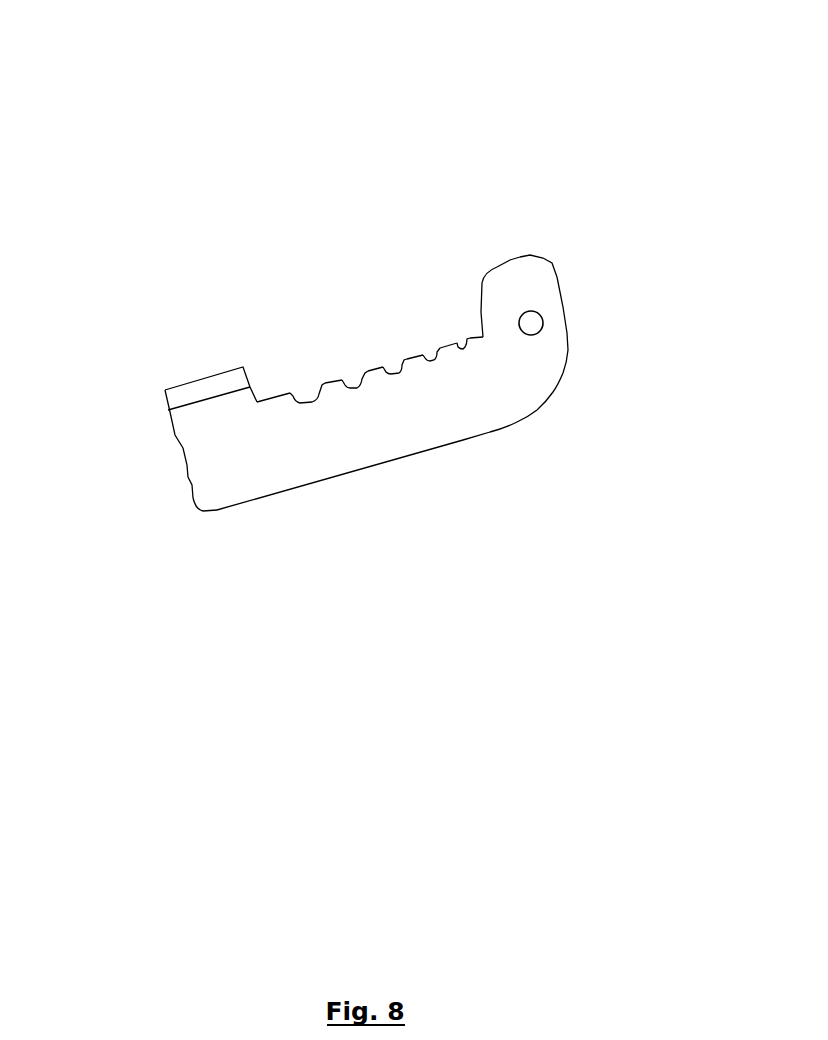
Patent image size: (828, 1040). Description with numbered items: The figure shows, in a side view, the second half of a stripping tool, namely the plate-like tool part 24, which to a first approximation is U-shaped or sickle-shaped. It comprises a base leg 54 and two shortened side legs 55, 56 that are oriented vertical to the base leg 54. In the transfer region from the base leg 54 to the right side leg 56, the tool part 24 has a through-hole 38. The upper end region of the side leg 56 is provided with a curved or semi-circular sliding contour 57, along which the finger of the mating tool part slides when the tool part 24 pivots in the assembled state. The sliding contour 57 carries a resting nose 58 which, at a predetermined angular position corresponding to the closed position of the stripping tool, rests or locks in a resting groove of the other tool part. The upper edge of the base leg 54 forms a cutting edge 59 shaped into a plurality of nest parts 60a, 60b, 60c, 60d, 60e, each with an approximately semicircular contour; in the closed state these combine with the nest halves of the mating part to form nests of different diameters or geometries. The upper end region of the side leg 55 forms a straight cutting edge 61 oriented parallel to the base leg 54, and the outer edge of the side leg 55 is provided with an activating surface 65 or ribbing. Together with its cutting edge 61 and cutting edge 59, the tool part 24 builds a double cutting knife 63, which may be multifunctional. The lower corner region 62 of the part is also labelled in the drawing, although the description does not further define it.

The tool part 24 is at (369, 326).
The double cutting knife 63 is at (407, 224).
The base leg 54 is at (399, 428).
The side leg 55 is at (200, 433).
The side leg 56 is at (543, 283).
The sliding contour 57 is at (495, 270).
The resting nose 58 is at (530, 256).
The cutting edge 59 is at (333, 377).
The nest part 60a is at (308, 398).
The nest part 60b is at (355, 386).
The nest part 60c is at (392, 371).
The nest part 60d is at (430, 358).
The nest part 60e is at (462, 347).
The cutting edge 61 is at (200, 378).
The bottom corner 62 is at (205, 514).
The activating surface 65 is at (191, 485).
The through-hole 38 is at (543, 323).